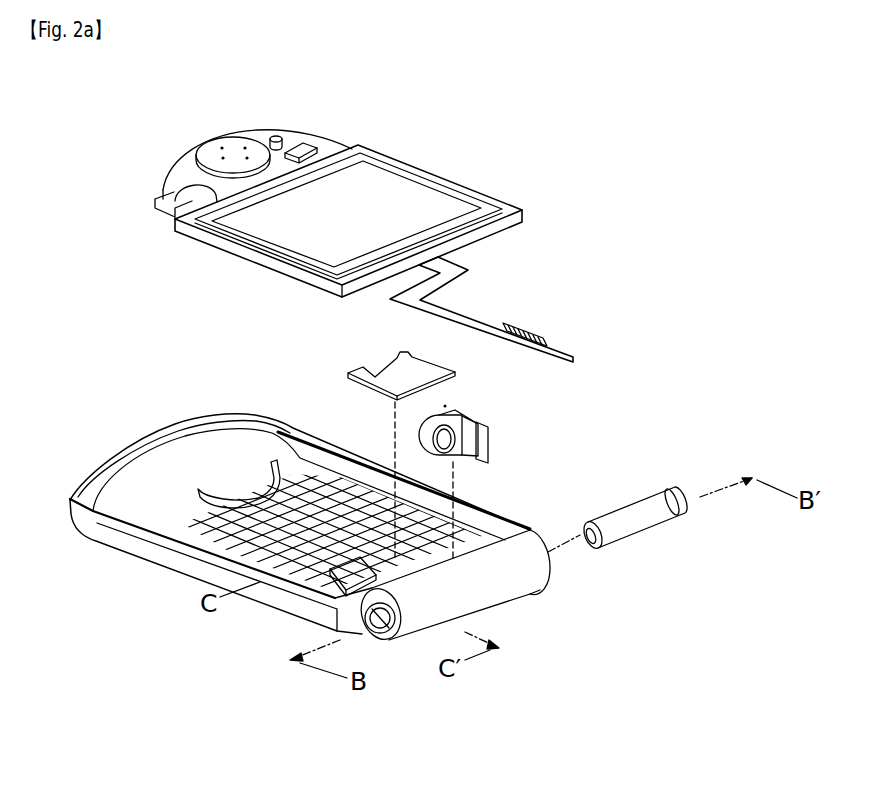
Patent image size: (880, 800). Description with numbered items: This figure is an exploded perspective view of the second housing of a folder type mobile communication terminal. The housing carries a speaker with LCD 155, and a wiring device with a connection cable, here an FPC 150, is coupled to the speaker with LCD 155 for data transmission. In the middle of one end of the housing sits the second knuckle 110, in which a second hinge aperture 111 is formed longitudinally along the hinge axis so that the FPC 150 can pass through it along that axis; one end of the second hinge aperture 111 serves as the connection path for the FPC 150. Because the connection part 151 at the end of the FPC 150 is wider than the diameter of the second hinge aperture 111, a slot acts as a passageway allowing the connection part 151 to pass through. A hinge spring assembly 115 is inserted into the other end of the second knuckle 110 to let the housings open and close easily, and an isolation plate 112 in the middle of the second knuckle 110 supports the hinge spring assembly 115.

The speaker with LCD 155 is at (422, 186).
The FPC 150 is at (453, 312).
The connection part 151 is at (527, 327).
The isolation plate 112 is at (479, 433).
The hinge spring assembly 115 is at (640, 502).
The second knuckle 110 is at (500, 582).
The second hinge aperture 111 is at (373, 632).